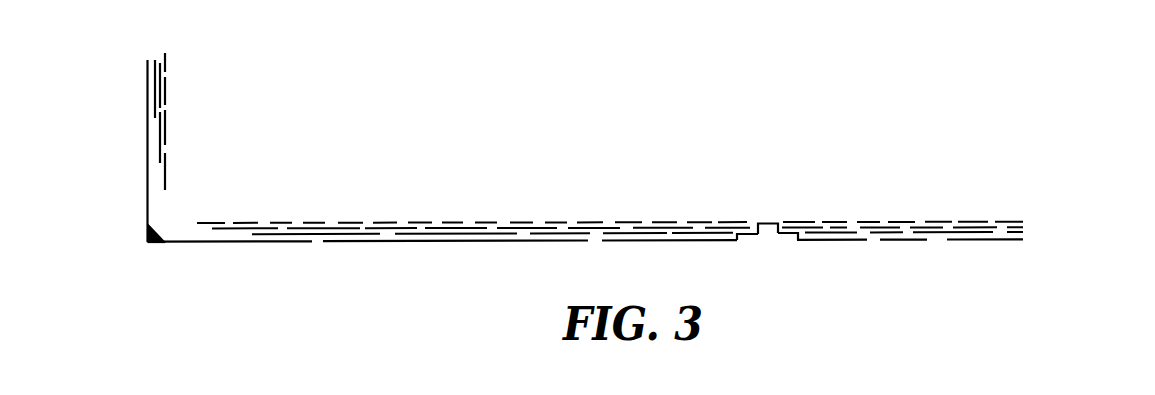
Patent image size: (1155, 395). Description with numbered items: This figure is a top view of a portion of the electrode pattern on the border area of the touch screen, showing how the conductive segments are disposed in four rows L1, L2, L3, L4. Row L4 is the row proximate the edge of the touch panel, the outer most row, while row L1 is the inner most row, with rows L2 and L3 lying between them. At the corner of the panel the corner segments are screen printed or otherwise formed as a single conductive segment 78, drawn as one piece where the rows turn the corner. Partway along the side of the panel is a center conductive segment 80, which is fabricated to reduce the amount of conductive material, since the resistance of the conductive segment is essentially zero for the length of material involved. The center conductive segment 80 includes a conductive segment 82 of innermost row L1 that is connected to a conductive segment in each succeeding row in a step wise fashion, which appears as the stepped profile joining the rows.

The single conductive segment 78 is at (159, 233).
The center conductive segment 80 is at (762, 198).
The conductive segment of innermost row 82 is at (772, 222).
The inner most row L1 is at (1023, 222).
The row of conductive segments L2 is at (1023, 227).
The row of conductive segments L3 is at (1025, 230).
The outer most row L4 is at (1023, 239).